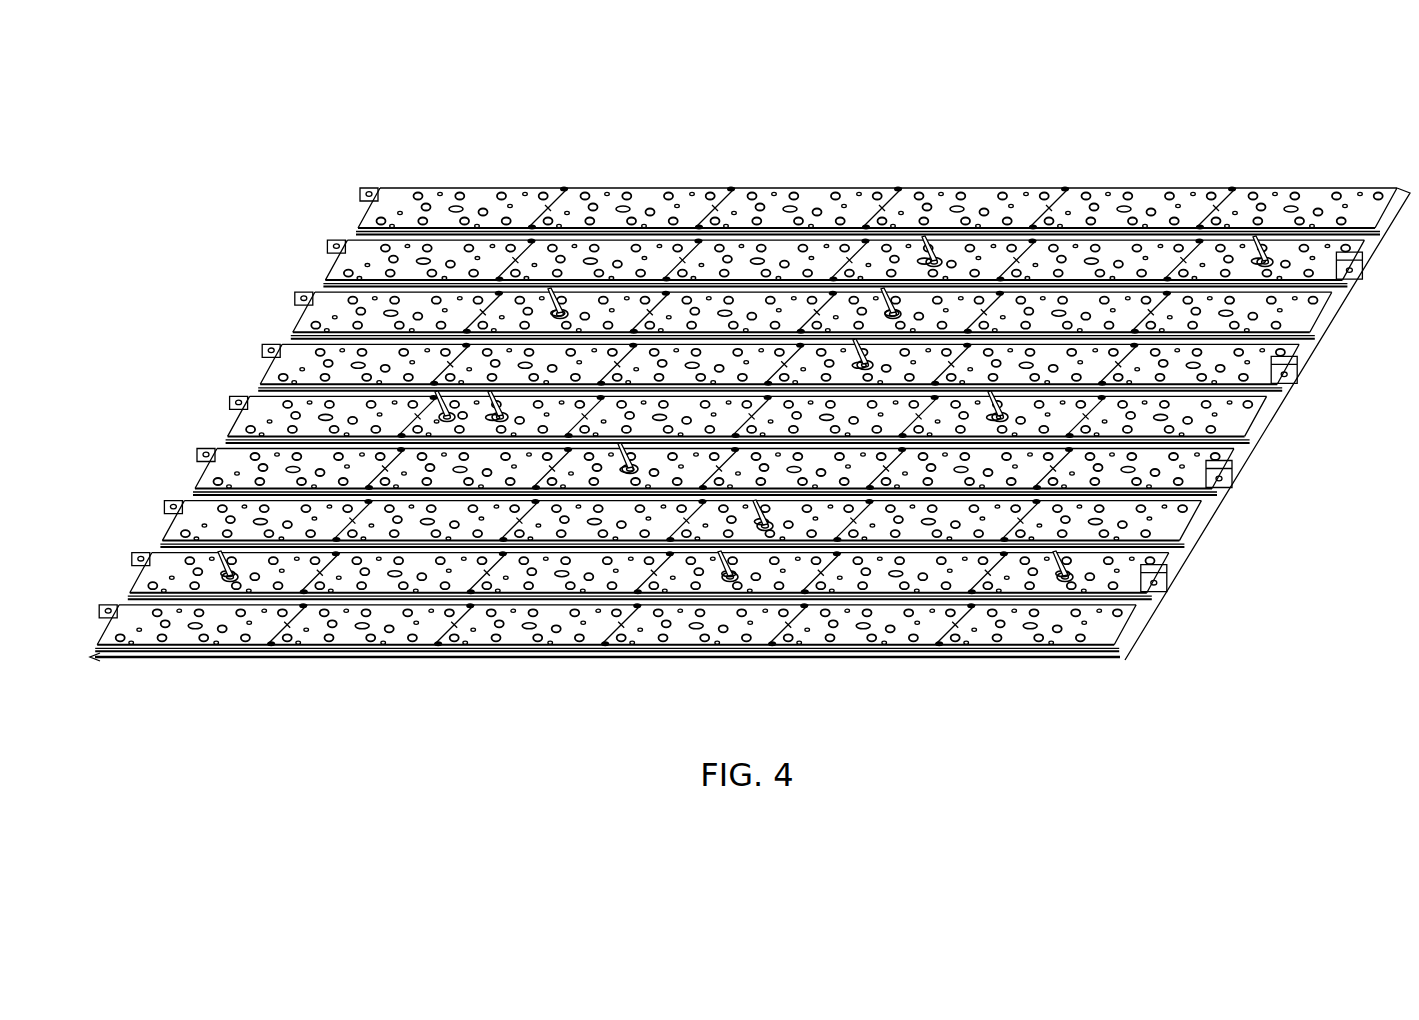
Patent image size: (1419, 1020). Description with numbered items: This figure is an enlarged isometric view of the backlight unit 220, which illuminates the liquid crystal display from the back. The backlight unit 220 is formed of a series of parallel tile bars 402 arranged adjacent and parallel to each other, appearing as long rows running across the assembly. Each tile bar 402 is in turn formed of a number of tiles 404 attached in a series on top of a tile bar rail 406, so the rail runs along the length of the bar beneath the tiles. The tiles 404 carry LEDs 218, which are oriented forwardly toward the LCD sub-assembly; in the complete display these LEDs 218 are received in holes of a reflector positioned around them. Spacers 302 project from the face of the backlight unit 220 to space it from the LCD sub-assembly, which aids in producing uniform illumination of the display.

The backlight unit 220 is at (318, 122).
The tile 404 is at (655, 192).
The LED 218 is at (835, 195).
The spacer 302 is at (945, 250).
The tile bar 402 is at (360, 208).
The tile bar rail 406 is at (1183, 560).